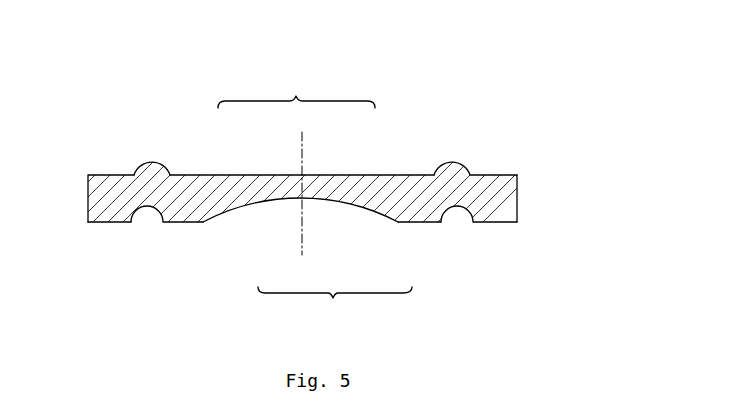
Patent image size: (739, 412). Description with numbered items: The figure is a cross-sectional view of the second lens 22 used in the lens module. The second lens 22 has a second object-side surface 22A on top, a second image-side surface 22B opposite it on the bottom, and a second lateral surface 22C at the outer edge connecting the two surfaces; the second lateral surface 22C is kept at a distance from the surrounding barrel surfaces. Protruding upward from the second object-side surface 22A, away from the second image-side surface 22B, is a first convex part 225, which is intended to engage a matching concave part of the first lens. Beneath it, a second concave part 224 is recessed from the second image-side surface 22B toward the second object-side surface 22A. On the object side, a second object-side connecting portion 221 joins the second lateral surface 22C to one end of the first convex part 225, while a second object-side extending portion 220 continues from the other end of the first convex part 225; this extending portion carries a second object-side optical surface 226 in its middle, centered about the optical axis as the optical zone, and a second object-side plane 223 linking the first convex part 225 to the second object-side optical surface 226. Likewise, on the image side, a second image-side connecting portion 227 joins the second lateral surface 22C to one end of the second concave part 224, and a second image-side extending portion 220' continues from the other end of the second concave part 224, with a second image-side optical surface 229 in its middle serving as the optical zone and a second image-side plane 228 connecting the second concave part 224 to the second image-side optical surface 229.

The second lens 22 is at (292, 41).
The second object-side extending portion 220 is at (296, 86).
The second image-side extending portion 220' is at (335, 307).
The second object-side connecting portion 221 is at (110, 175).
The second object-side plane 223 is at (197, 175).
The second concave part 224 is at (133, 222).
The first convex part 225 is at (153, 163).
The second object-side optical surface 226 is at (327, 175).
The second image-side connecting portion 227 is at (108, 222).
The second image-side plane 228 is at (412, 222).
The second image-side optical surface 229 is at (253, 205).
The second object-side surface 22A is at (514, 159).
The second image-side surface 22B is at (503, 246).
The second lateral surface 22C is at (517, 195).